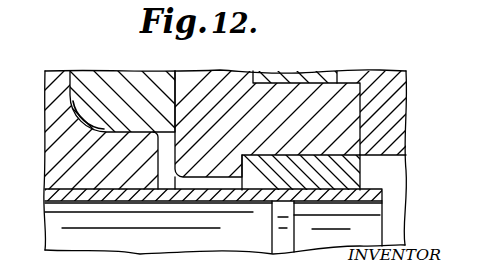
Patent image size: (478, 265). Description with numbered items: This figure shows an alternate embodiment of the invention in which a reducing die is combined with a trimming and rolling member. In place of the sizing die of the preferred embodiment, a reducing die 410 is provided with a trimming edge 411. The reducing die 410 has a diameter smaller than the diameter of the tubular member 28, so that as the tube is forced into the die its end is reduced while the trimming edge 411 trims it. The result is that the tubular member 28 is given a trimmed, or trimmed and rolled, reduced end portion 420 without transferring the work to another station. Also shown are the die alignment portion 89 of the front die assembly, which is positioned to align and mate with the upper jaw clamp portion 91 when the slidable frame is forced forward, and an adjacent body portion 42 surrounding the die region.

The sealing ring body 42 is at (49, 90).
The die alignment portion 89 is at (102, 84).
The upper jaw clamp portion 91 is at (107, 132).
The tubular member 28 is at (107, 196).
The reducing die 410 is at (282, 177).
The trimming edge 411 is at (362, 188).
The reduced end portion 420 is at (343, 194).